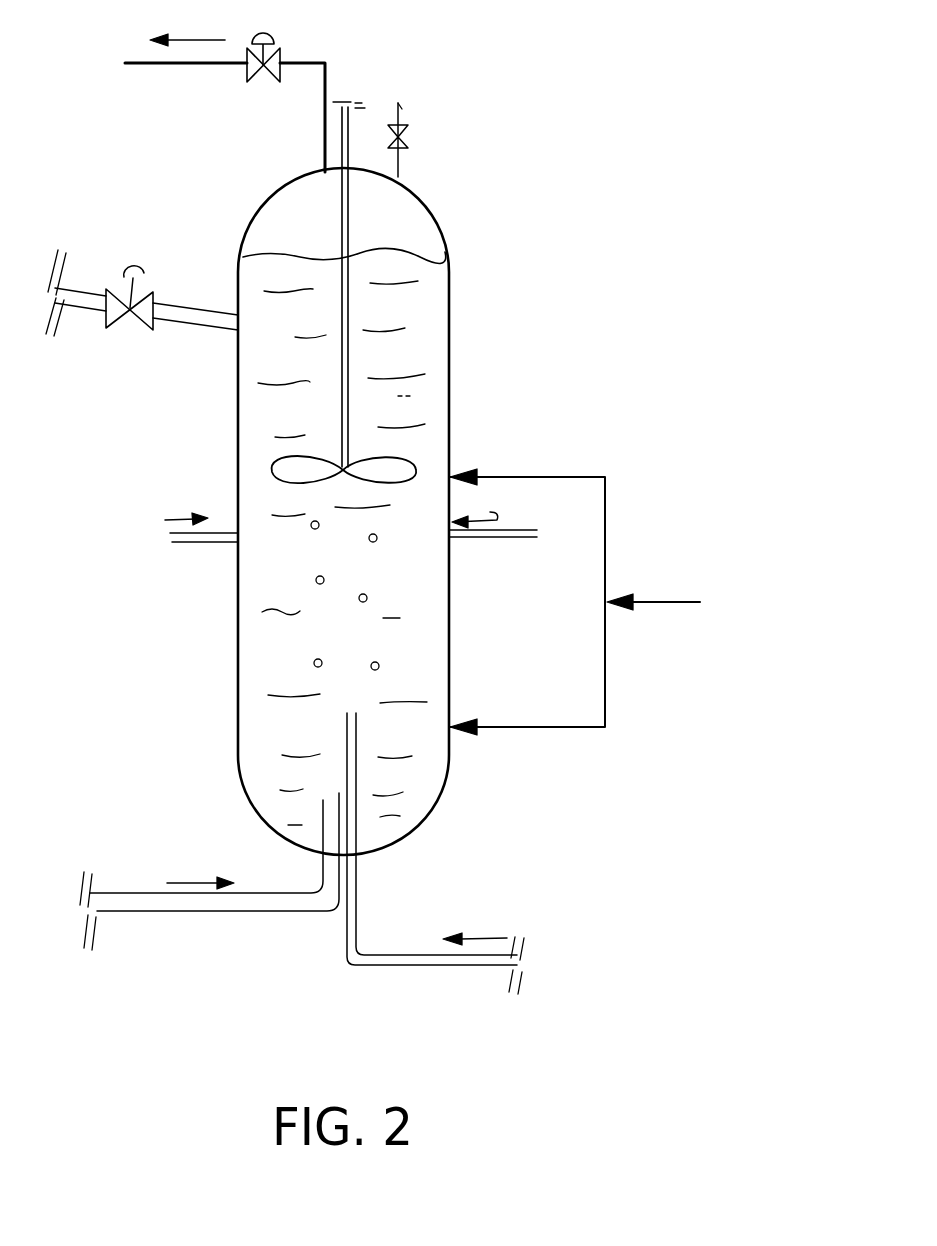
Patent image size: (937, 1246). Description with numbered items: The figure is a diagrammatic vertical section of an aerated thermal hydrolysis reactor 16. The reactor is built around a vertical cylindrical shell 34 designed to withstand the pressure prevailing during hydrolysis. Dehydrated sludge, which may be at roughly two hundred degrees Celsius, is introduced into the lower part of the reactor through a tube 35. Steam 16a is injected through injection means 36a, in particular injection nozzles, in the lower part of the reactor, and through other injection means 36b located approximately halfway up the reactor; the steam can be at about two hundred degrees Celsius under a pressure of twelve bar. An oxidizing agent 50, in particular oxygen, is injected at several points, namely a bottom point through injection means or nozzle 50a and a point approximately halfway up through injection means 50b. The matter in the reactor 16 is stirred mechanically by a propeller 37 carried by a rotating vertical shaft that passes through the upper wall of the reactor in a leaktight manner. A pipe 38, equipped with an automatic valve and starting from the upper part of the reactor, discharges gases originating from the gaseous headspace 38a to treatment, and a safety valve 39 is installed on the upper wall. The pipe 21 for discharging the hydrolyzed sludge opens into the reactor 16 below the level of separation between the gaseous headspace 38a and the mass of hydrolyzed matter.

The aerated thermal hydrolysis reactor 16 is at (228, 622).
The steam 16a is at (472, 937).
The pipe for discharging the hydrolyzed sludge 21 is at (183, 313).
The vertical cylindrical shell 34 is at (450, 388).
The tube 35 is at (237, 903).
The injection means 36a is at (353, 880).
The other injection means 36b is at (467, 537).
The propeller 37 is at (293, 472).
The pipe 38 is at (148, 63).
The gaseous headspace 38a is at (405, 222).
The safety valve 39 is at (408, 132).
The oxidizing agent 50 is at (655, 598).
The injection means 50a is at (487, 730).
The injection means 50b is at (512, 473).